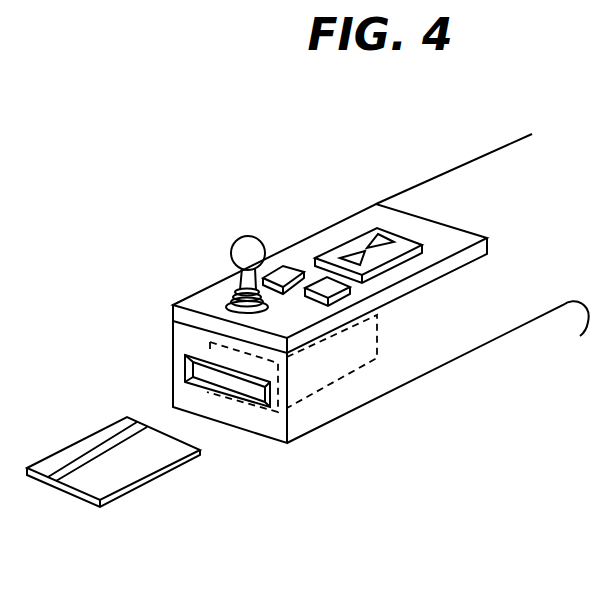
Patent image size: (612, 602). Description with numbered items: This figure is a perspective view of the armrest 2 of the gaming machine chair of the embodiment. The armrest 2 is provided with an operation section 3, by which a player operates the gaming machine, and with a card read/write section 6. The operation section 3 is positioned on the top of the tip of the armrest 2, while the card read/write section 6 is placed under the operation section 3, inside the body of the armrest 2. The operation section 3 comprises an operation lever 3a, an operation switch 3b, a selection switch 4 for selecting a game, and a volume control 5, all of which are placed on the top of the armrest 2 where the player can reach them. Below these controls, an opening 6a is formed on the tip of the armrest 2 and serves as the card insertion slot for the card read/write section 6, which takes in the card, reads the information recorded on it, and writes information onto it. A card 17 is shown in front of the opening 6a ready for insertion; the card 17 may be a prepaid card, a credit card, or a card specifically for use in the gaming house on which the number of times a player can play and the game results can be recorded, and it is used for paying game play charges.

The armrest 2 is at (477, 168).
The operation section 3 is at (233, 238).
The operation lever 3a is at (232, 254).
The operation switch 3b is at (350, 287).
The selection switch 4 is at (282, 273).
The volume control 5 is at (362, 243).
The card read/write section 6 is at (340, 380).
The opening 6a is at (250, 407).
The card 17 is at (115, 495).